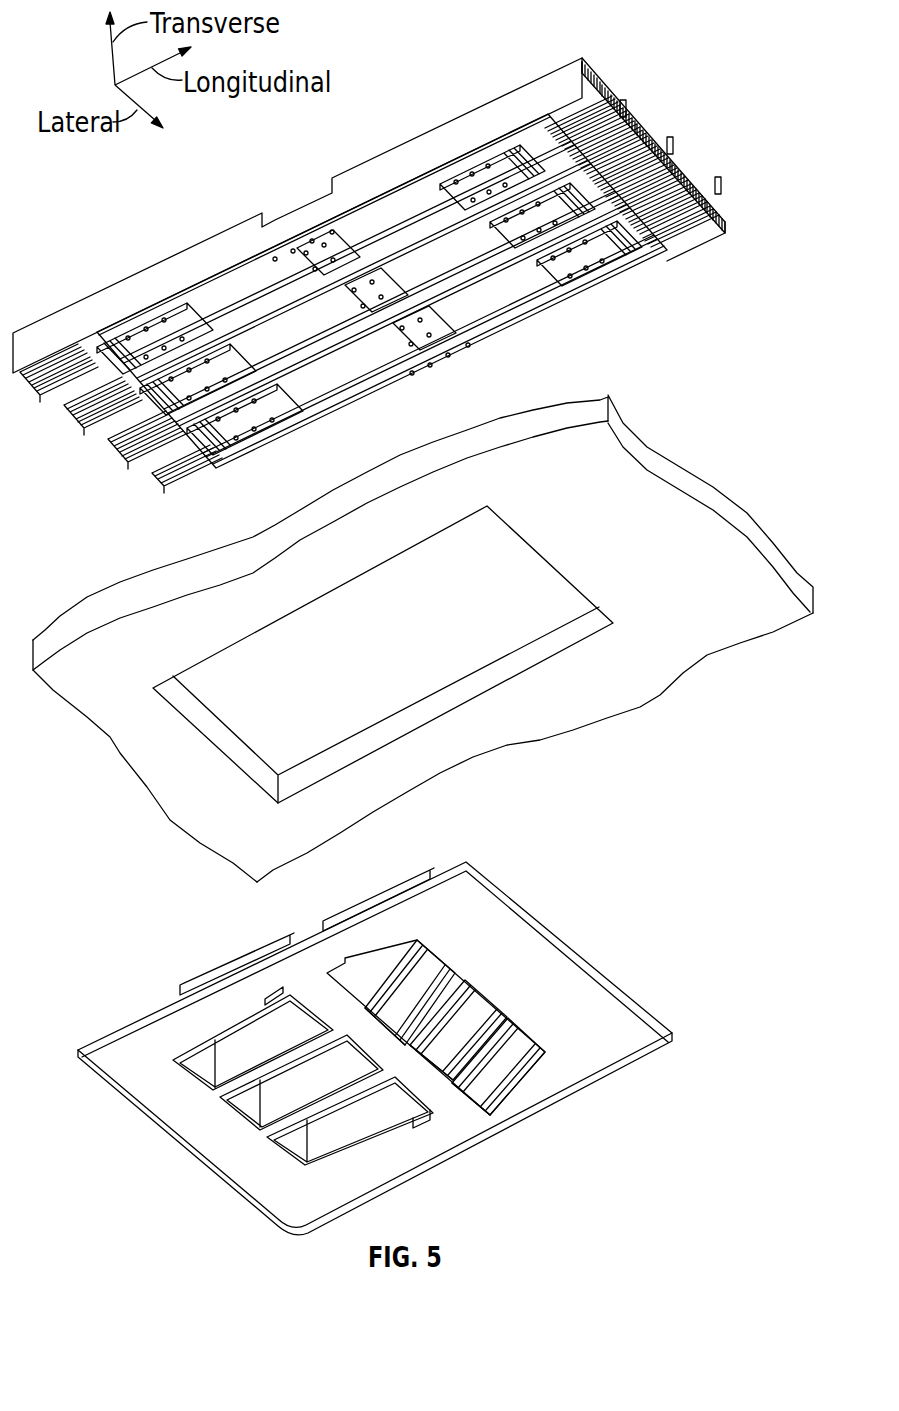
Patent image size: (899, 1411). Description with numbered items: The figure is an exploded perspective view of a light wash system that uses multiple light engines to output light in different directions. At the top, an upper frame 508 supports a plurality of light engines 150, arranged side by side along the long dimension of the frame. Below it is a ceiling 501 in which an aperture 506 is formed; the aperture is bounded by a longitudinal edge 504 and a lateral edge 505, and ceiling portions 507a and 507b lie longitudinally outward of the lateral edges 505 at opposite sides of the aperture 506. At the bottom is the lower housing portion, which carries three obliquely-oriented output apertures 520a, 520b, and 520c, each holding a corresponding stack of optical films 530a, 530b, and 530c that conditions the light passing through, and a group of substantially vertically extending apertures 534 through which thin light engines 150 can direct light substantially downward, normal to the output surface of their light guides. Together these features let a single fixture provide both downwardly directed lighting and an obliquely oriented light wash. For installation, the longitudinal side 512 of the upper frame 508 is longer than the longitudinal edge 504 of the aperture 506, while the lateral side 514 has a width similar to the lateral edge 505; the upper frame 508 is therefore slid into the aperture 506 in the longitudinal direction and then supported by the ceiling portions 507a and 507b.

The light engine 150 is at (480, 177).
The ceiling 501 is at (713, 595).
The longitudinal edge 504 is at (468, 692).
The lateral edge 505 is at (212, 723).
The aperture 506 is at (257, 648).
The ceiling portion 507a is at (212, 757).
The ceiling portion 507b is at (556, 556).
The upper frame 508 is at (224, 252).
The longitudinal side 512 is at (385, 161).
The lateral side 514 is at (664, 121).
The obliquely-oriented output aperture 520a is at (435, 952).
The obliquely-oriented output aperture 520b is at (480, 992).
The obliquely-oriented output aperture 520c is at (528, 1032).
The stack of optical films 530a is at (388, 1005).
The stack of optical films 530b is at (450, 1028).
The stack of optical films 530c is at (498, 1063).
The vertically extending aperture 534 is at (317, 1143).